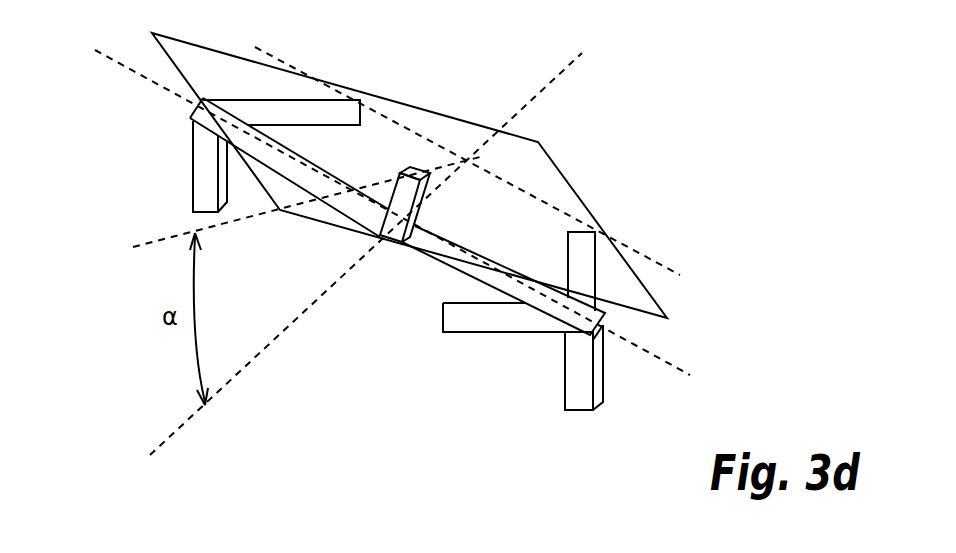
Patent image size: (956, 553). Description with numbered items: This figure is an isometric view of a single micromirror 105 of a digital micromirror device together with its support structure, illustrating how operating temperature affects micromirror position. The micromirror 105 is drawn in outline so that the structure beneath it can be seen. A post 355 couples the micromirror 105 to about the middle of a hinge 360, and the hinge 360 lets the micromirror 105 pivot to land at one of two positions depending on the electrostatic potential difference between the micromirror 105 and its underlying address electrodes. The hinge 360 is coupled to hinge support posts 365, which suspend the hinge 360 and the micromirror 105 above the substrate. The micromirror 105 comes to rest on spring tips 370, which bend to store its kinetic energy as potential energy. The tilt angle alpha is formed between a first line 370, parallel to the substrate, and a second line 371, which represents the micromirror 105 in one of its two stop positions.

The micromirror 105 is at (537, 158).
The post 355 is at (412, 193).
The hinge 360 is at (475, 270).
The hinge support posts 365 is at (223, 180).
The spring tips 370 is at (197, 185).
The second line 371 is at (130, 250).